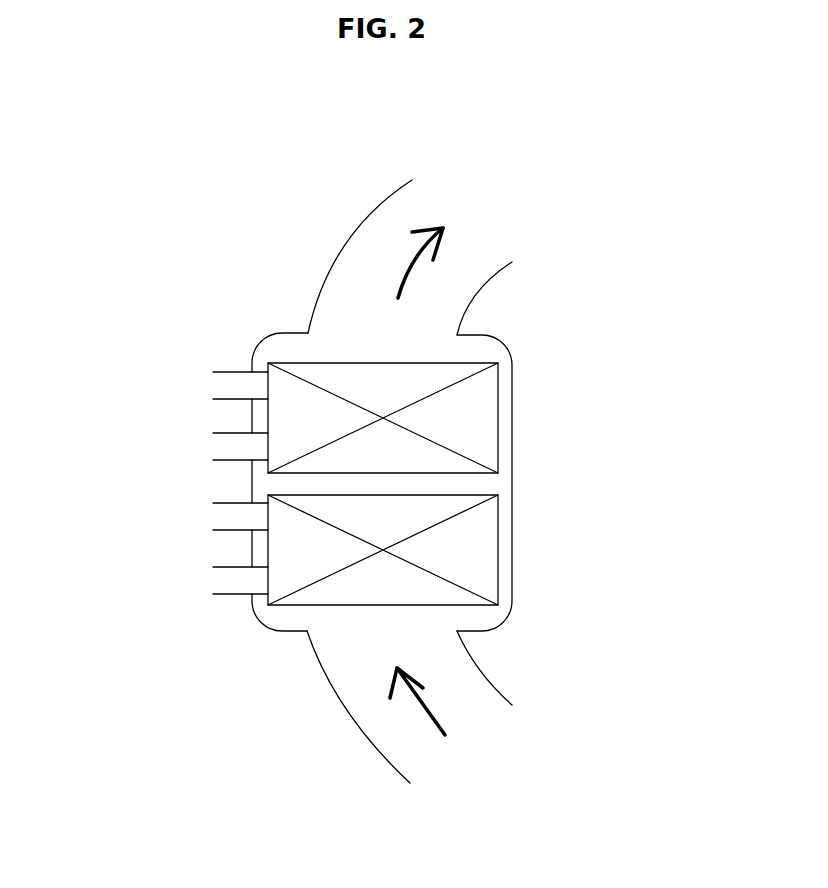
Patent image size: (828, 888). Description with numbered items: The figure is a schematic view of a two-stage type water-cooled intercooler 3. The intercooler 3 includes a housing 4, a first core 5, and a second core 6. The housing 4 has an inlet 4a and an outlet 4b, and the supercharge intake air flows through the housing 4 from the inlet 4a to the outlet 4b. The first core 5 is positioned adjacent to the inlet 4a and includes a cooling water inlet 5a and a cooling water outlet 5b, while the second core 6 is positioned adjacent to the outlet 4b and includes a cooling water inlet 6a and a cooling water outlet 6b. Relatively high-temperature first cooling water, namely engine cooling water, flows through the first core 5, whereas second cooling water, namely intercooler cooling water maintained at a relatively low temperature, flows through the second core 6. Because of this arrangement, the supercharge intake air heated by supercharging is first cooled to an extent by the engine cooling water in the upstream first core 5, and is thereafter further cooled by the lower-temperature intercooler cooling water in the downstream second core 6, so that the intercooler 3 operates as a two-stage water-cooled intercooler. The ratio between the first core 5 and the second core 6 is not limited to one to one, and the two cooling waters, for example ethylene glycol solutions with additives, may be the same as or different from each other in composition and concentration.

The water-cooled intercooler 3 is at (514, 339).
The housing 4 is at (512, 482).
The inlet 4a is at (342, 650).
The outlet 4b is at (342, 300).
The first core 5 is at (499, 550).
The cooling water inlet 5a is at (218, 513).
The cooling water outlet 5b is at (218, 580).
The second core 6 is at (499, 413).
The cooling water inlet 6a is at (218, 385).
The cooling water outlet 6b is at (218, 447).